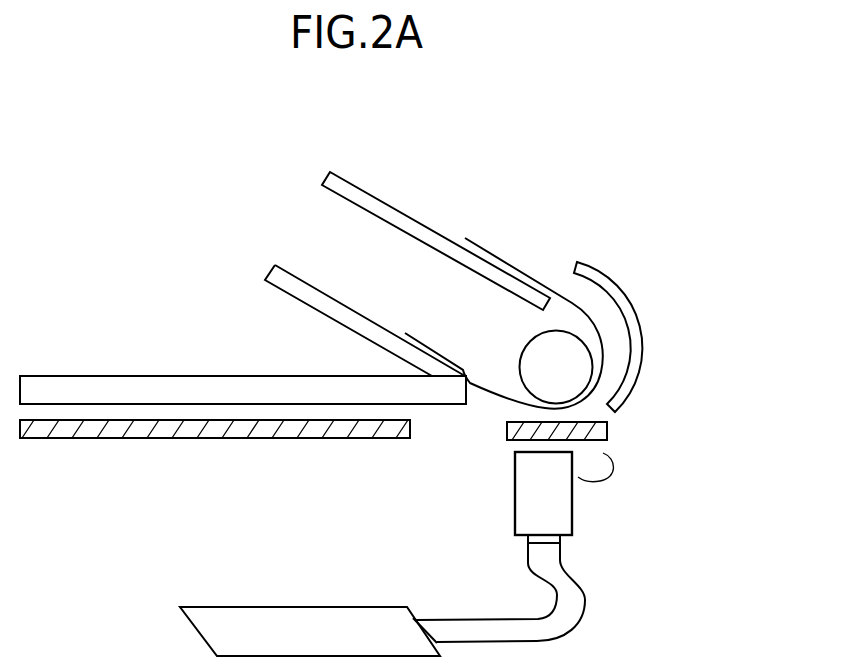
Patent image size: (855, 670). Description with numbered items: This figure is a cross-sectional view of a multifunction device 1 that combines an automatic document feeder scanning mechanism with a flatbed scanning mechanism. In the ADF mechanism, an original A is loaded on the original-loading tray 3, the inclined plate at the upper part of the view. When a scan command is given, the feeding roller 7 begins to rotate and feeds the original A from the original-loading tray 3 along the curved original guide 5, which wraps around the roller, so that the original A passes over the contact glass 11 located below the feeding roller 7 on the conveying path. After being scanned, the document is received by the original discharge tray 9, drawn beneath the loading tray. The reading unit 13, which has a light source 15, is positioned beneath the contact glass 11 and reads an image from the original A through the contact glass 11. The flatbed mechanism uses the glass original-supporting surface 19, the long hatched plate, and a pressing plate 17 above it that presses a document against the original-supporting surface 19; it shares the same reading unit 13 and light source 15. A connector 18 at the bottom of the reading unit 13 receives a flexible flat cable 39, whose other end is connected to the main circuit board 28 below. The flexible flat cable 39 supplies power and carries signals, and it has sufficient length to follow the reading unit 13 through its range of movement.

The multifunction device 1 is at (213, 178).
The original-loading tray 3 is at (365, 188).
The original A is at (490, 250).
The original guide 5 is at (605, 282).
The feeding roller 7 is at (545, 352).
The original discharge tray 9 is at (302, 290).
The contact glass 11 is at (600, 433).
The reading unit 13 is at (525, 478).
The light source 15 is at (608, 481).
The pressing plate 17 is at (95, 388).
The connector 18 is at (558, 537).
The original-supporting surface 19 is at (92, 432).
The main circuit board 28 is at (282, 608).
The flexible flat cable 39 is at (575, 612).